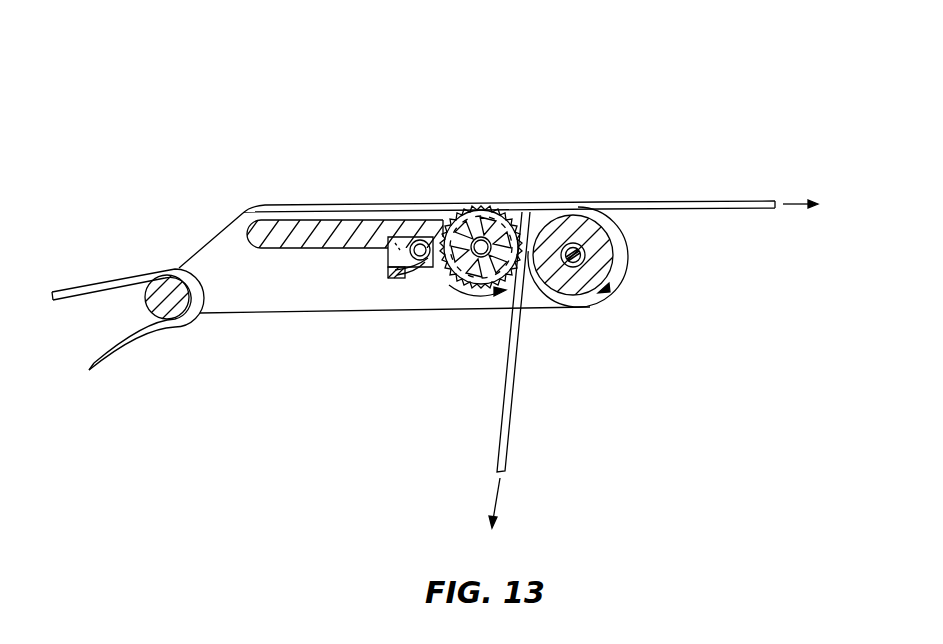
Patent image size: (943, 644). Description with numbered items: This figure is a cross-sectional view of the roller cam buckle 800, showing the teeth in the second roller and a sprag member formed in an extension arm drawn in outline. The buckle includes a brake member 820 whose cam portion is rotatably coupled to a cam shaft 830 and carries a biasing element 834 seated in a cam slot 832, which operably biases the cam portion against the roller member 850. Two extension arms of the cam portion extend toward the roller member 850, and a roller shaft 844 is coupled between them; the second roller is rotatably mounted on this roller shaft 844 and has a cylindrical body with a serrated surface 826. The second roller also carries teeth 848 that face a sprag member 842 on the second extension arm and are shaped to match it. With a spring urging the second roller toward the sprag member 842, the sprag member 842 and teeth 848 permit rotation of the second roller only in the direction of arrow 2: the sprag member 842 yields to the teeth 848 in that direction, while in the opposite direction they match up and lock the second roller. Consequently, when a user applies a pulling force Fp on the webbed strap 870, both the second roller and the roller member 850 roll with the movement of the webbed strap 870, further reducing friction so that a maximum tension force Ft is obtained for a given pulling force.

The roller cam buckle 800 is at (400, 76).
The brake member 820 is at (340, 175).
The serrated surface 826 is at (466, 205).
The cam shaft 830 is at (417, 272).
The cam slot 832 is at (387, 252).
The biasing element 834 is at (422, 262).
The sprag member 842 is at (447, 207).
The roller shaft 844 is at (497, 205).
The teeth 848 is at (517, 207).
The roller member 850 is at (589, 312).
The webbed strap 870 is at (666, 201).
The arrow 2 is at (473, 298).